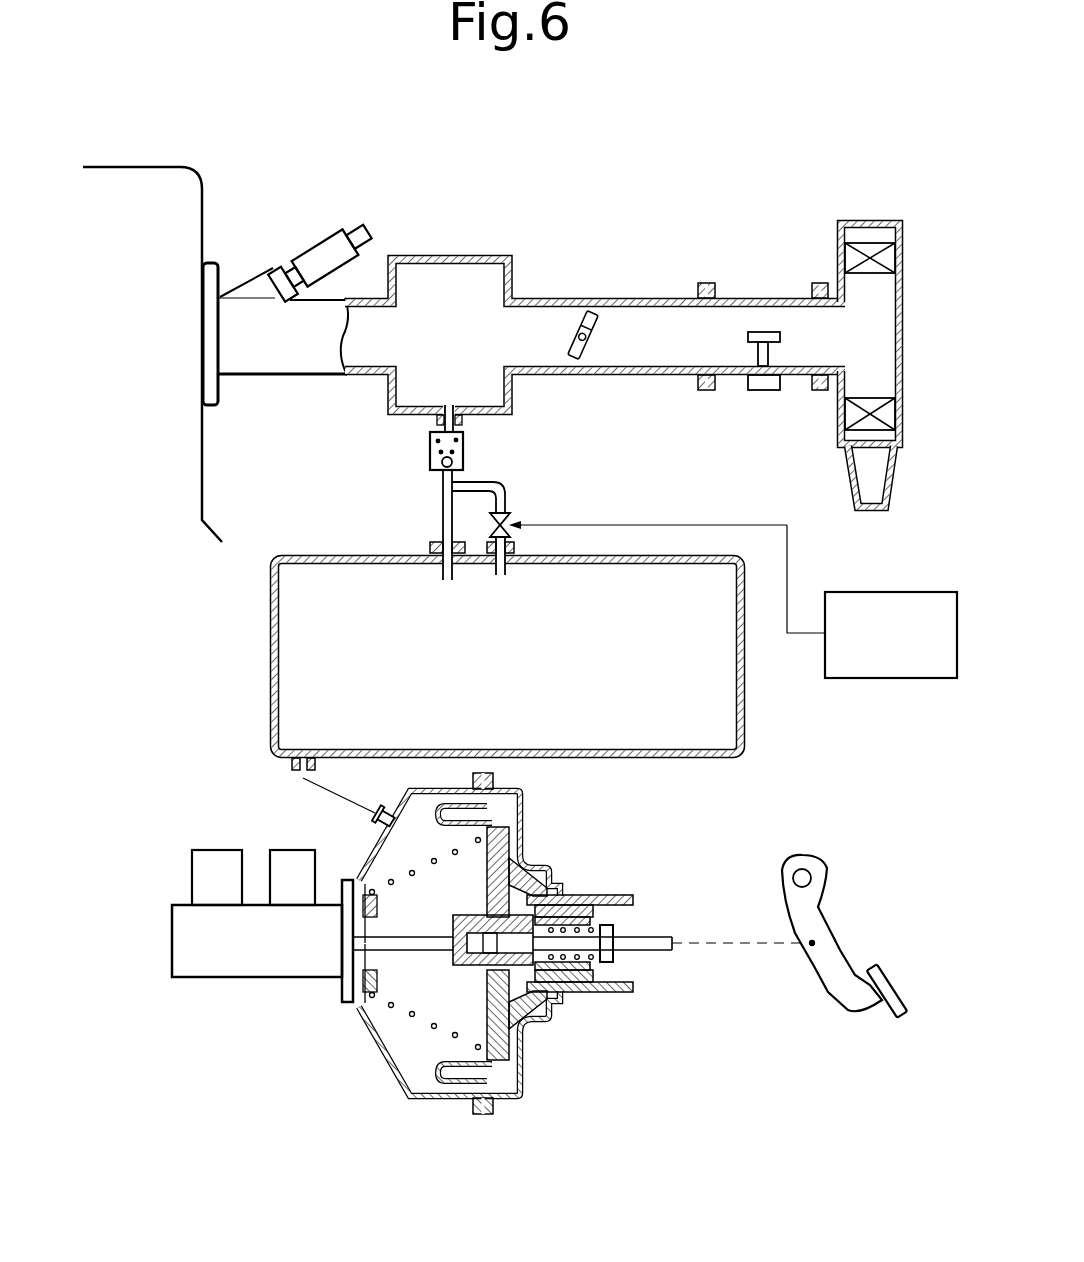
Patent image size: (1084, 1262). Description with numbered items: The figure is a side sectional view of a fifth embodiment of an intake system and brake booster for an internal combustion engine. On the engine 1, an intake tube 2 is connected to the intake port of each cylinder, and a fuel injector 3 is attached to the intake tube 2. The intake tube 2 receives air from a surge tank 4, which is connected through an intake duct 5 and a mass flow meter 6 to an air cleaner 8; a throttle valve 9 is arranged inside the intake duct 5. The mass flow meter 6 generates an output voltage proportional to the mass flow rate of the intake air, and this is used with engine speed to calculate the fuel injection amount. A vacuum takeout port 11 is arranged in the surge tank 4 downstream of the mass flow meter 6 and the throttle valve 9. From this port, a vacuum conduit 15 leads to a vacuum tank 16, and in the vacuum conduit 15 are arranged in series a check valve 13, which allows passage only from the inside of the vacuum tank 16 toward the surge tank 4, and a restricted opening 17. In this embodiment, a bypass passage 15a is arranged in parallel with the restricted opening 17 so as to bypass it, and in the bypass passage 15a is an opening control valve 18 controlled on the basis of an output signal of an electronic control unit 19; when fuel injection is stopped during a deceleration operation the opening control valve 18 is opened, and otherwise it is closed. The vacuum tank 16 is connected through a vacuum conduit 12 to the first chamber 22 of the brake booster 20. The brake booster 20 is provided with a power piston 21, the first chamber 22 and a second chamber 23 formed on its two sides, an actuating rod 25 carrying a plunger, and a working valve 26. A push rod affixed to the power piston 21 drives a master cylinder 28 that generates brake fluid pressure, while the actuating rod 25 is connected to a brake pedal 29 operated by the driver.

The engine 1 is at (182, 166).
The intake tube 2 is at (268, 356).
The fuel injector 3 is at (318, 250).
The surge tank 4 is at (457, 254).
The intake duct 5 is at (597, 376).
The mass flow meter 6 is at (764, 297).
The air cleaner 8 is at (862, 220).
The throttle valve 9 is at (578, 300).
The vacuum takeout port 11 is at (445, 405).
The vacuum conduit 12 is at (318, 790).
The check valve 13 is at (465, 452).
The vacuum conduit 15 is at (440, 503).
The bypass passage 15a is at (506, 486).
The vacuum tank 16 is at (268, 658).
The restricted opening 17 is at (447, 570).
The opening control valve 18 is at (516, 521).
The electronic control unit 19 is at (896, 600).
The brake booster 20 is at (505, 937).
The power piston 21 is at (545, 887).
The first chamber 22 is at (400, 855).
The second chamber 23 is at (513, 818).
The actuating rod 25 is at (655, 950).
The working valve 26 is at (595, 917).
The master cylinder 28 is at (250, 978).
The brake pedal 29 is at (830, 975).